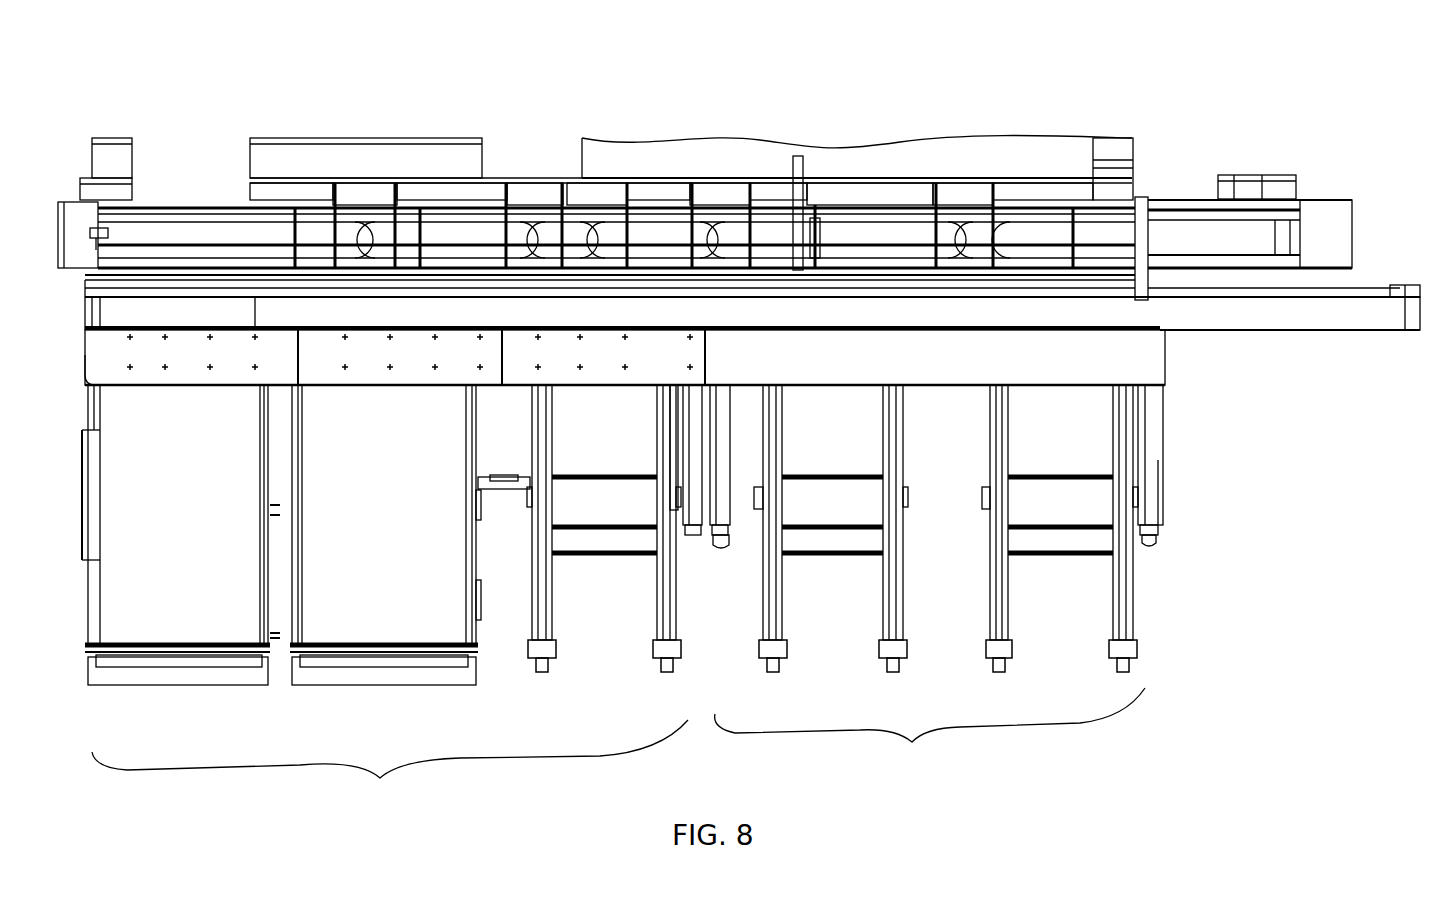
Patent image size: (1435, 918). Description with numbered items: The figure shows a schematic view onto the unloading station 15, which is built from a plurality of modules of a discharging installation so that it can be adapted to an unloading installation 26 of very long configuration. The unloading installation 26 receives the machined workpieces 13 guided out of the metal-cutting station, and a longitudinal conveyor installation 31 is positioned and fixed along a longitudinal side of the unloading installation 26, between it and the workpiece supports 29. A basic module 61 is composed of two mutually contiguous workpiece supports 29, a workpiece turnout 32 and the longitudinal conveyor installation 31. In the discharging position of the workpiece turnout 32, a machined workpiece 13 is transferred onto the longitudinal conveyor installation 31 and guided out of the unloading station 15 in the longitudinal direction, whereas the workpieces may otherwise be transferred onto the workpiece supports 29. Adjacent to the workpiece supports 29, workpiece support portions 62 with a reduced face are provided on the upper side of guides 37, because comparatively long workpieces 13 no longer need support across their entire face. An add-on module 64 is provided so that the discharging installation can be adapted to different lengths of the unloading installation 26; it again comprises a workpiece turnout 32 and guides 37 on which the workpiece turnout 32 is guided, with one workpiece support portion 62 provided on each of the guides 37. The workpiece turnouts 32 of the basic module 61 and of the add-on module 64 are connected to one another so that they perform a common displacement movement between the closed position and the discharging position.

The unloading station 15 is at (884, 84).
The unloading installation 26 is at (704, 98).
The machined workpiece 13 is at (118, 311).
The longitudinal conveyor installation 31 is at (1360, 345).
The workpiece turnout 32 is at (168, 402).
The workpiece support 29 is at (184, 528).
The workpiece support portion 62 is at (640, 612).
The guide 37 is at (520, 684).
The basic module 61 is at (390, 765).
The add-on module 64 is at (930, 728).